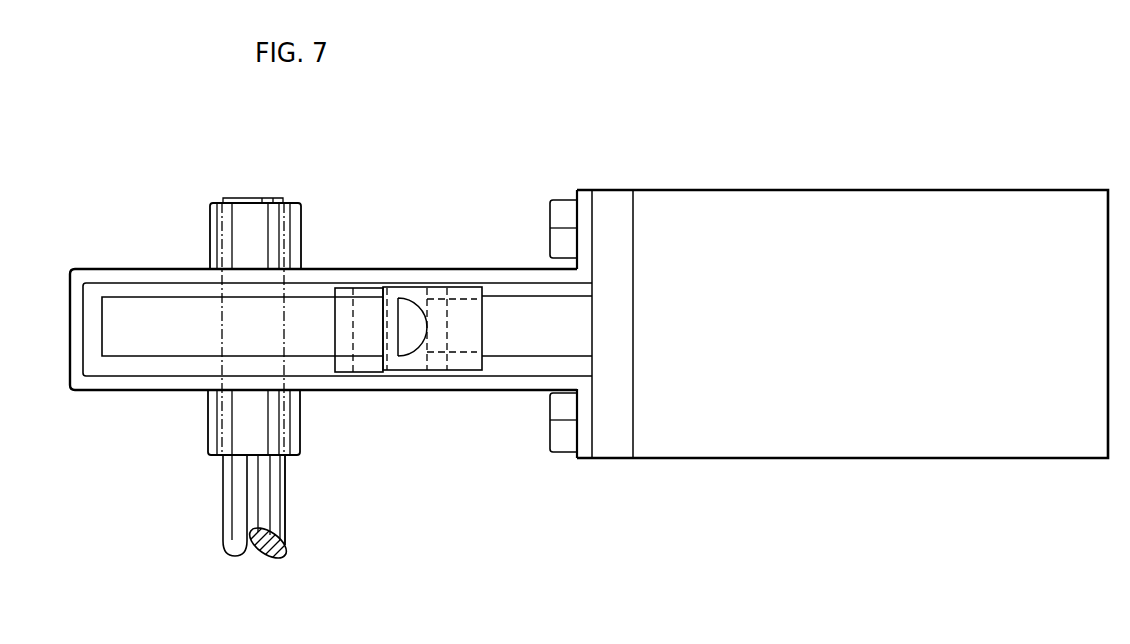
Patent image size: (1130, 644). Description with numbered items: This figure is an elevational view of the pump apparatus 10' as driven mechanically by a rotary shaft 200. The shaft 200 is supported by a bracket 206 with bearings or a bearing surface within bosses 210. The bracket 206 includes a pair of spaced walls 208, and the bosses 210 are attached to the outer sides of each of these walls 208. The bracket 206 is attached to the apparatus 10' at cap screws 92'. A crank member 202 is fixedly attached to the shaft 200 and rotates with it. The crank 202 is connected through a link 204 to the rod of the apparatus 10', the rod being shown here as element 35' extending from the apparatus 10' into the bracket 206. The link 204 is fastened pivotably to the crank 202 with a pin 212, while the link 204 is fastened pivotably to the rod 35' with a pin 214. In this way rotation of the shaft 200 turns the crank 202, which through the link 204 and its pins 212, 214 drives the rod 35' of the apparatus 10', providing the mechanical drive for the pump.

The apparatus 10' is at (842, 286).
The cap screws 92' is at (538, 338).
The spaced walls 208 is at (161, 269).
The bracket 206 is at (328, 245).
The crank member 202 is at (102, 312).
The bar 35' is at (537, 297).
The link 204 is at (406, 287).
The pin 212 is at (362, 366).
The pin 214 is at (440, 362).
The bosses 210 is at (210, 226).
The rotary shaft 200 is at (285, 515).